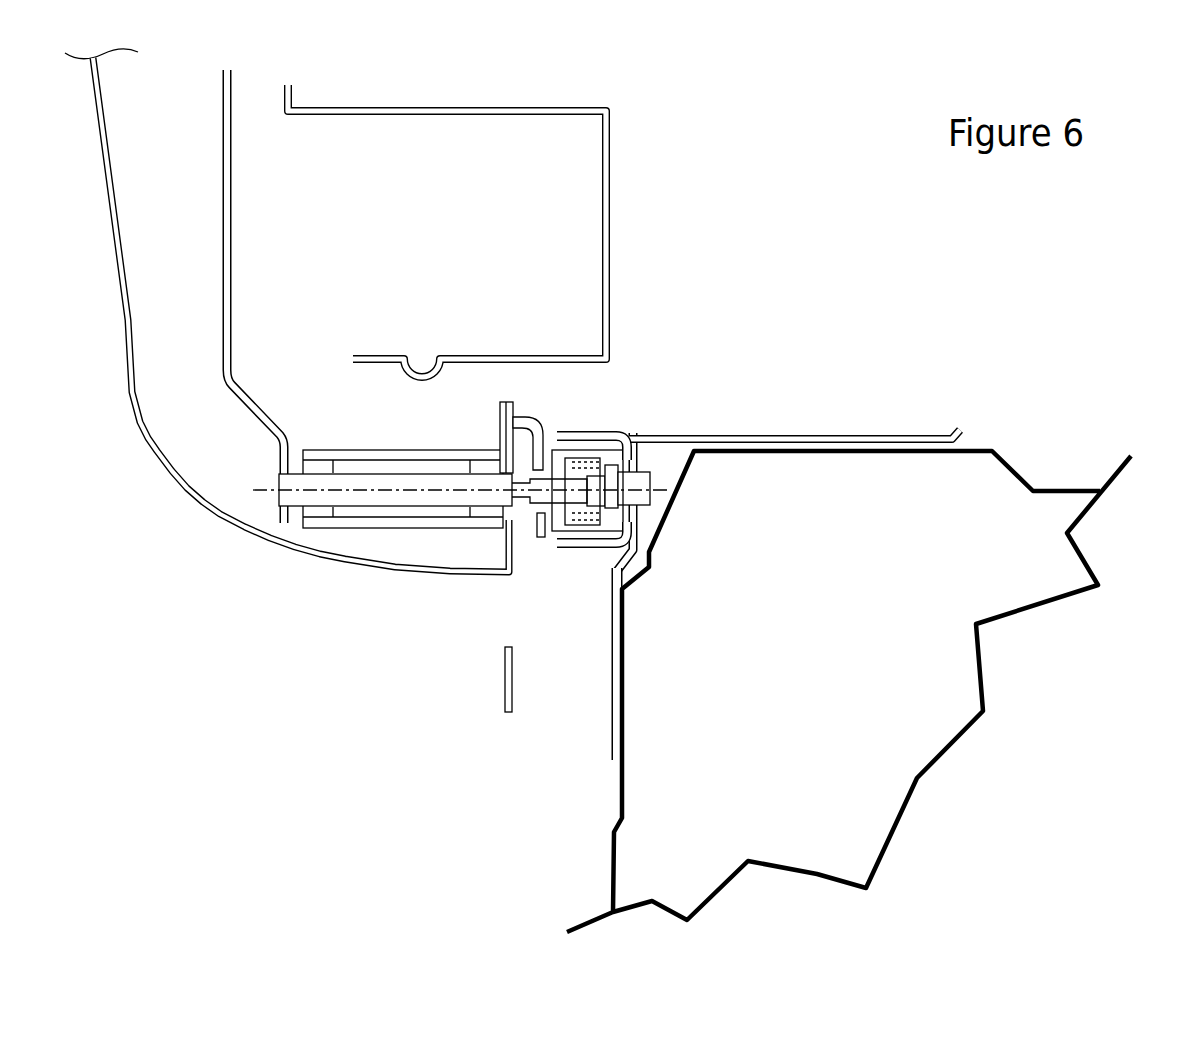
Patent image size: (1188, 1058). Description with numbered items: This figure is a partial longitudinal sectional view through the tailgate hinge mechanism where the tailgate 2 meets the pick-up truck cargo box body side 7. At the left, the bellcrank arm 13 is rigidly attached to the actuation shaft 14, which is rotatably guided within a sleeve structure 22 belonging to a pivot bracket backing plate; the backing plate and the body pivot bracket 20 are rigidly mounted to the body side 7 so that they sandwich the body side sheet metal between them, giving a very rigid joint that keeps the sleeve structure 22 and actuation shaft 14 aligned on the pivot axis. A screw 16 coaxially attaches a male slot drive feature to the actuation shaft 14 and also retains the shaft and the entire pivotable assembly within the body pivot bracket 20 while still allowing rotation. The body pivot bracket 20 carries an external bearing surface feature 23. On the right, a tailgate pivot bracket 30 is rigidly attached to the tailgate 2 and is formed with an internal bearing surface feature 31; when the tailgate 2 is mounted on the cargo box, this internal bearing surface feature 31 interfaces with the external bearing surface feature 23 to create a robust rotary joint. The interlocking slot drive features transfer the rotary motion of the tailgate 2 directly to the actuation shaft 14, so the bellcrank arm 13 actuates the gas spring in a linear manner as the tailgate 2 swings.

The tailgate 2 is at (950, 490).
The body side 7 is at (238, 525).
The bellcrank arm 13 is at (232, 177).
The actuation shaft 14 is at (347, 497).
The screw 16 is at (504, 500).
The body pivot bracket 20 is at (515, 417).
The sleeve structure 22 is at (397, 522).
The external bearing surface feature 23 is at (553, 535).
The tailgate pivot bracket 30 is at (786, 444).
The internal bearing surface feature 31 is at (590, 543).